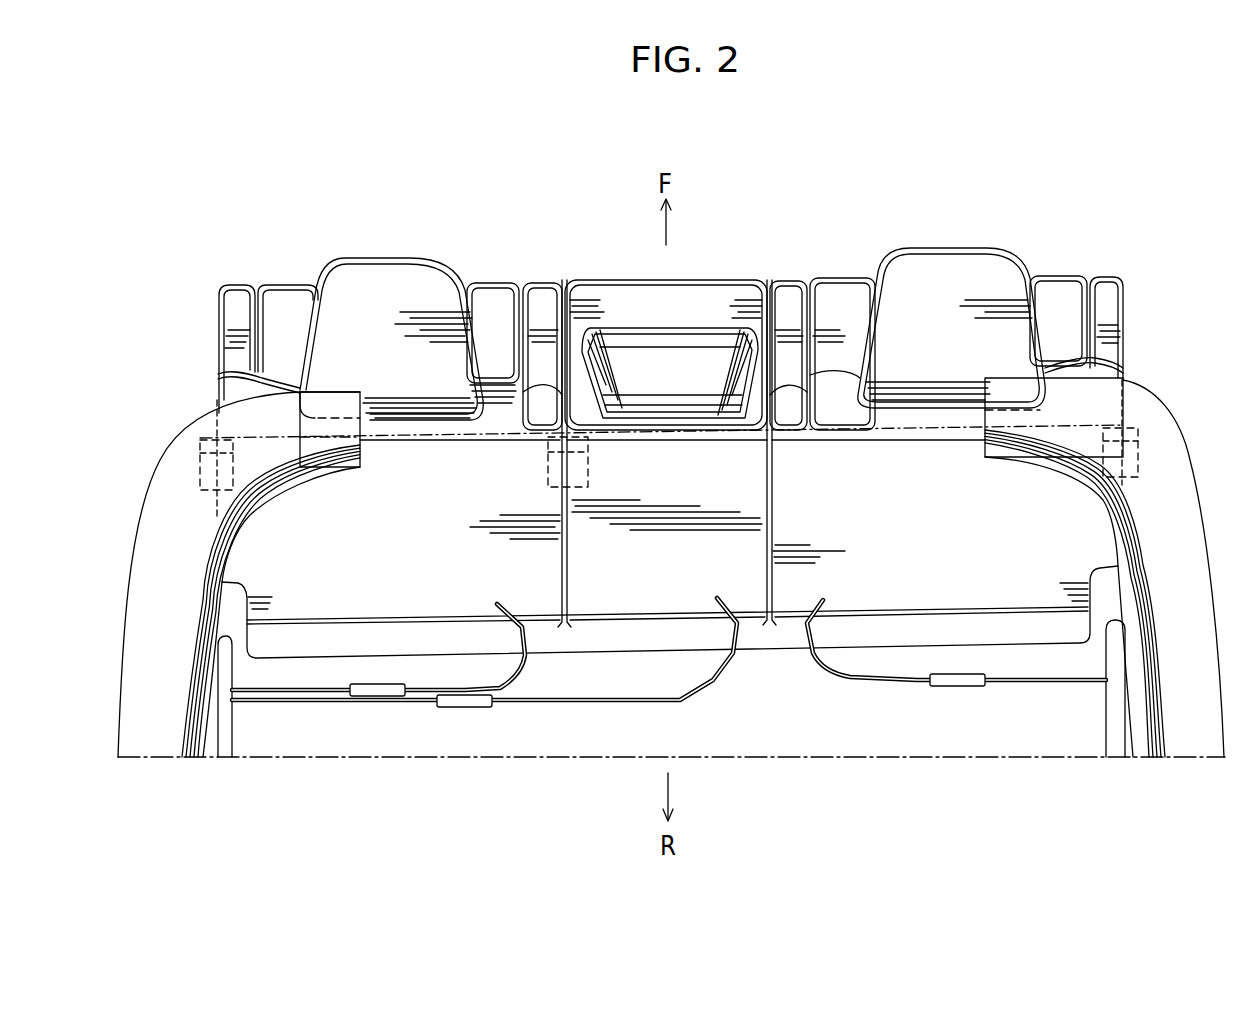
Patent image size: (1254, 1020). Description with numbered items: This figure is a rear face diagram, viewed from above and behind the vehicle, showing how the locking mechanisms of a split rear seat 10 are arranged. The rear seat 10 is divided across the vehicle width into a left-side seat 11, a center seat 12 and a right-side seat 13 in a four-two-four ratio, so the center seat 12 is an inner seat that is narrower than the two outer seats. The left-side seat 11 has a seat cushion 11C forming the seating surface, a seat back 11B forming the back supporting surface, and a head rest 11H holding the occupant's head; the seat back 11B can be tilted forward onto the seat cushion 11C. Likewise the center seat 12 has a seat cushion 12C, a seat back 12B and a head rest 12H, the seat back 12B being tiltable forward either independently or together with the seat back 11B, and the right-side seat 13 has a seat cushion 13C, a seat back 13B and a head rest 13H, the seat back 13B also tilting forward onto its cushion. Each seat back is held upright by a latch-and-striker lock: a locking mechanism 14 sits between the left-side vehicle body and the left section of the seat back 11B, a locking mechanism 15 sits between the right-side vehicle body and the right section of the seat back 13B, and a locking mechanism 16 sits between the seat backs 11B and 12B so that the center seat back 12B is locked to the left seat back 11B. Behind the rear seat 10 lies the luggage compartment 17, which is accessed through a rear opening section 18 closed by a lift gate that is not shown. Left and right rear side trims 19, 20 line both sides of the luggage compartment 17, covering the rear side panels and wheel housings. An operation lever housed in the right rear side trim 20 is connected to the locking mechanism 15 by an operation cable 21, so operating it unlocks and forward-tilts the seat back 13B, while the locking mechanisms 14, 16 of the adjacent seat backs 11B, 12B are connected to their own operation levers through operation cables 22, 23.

The rear seat 10 is at (1145, 313).
The left-side seat 11 is at (282, 276).
The head rest 11H is at (375, 272).
The seat cushion 11C is at (478, 282).
The seat back 11B is at (449, 485).
The center seat 12 is at (597, 277).
The head rest 12H is at (633, 352).
The seat cushion 12C is at (694, 294).
The seat back 12B is at (692, 475).
The right-side seat 13 is at (836, 275).
The head rest 13H is at (958, 264).
The seat cushion 13C is at (1053, 290).
The seat back 13B is at (956, 485).
The locking mechanism 14 is at (200, 470).
The locking mechanism 15 is at (1138, 456).
The locking mechanism 16 is at (548, 470).
The luggage compartment 17 is at (832, 740).
The rear opening section 18 is at (1133, 690).
The rear side trim 19 is at (212, 726).
The rear side trim 20 is at (1112, 728).
The operation cable 21 is at (905, 688).
The operation cable 22 is at (526, 664).
The operation cable 23 is at (610, 706).